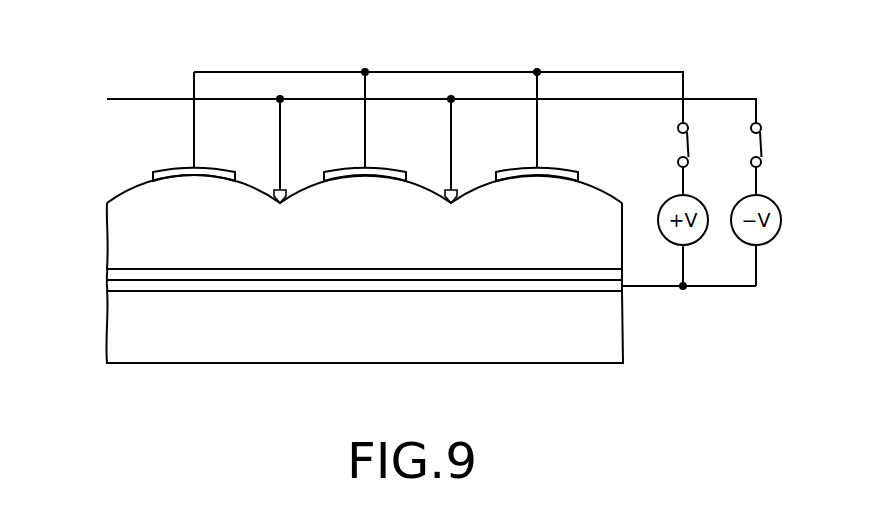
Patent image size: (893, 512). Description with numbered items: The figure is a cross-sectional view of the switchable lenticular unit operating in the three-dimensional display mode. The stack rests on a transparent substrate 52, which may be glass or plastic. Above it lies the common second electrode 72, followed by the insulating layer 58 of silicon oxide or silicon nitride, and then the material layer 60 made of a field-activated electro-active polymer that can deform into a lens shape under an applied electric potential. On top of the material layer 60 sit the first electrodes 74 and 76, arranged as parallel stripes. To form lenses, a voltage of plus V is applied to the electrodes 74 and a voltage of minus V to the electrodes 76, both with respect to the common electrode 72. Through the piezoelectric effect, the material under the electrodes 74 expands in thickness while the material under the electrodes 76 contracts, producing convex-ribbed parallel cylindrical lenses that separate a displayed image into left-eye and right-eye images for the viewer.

The transparent substrate 52 is at (127, 335).
The insulating layer 58 is at (116, 275).
The material layer 60 is at (123, 228).
The second electrode 72 is at (118, 286).
The first electrodes 74 is at (578, 178).
The first electrodes 76 is at (287, 192).